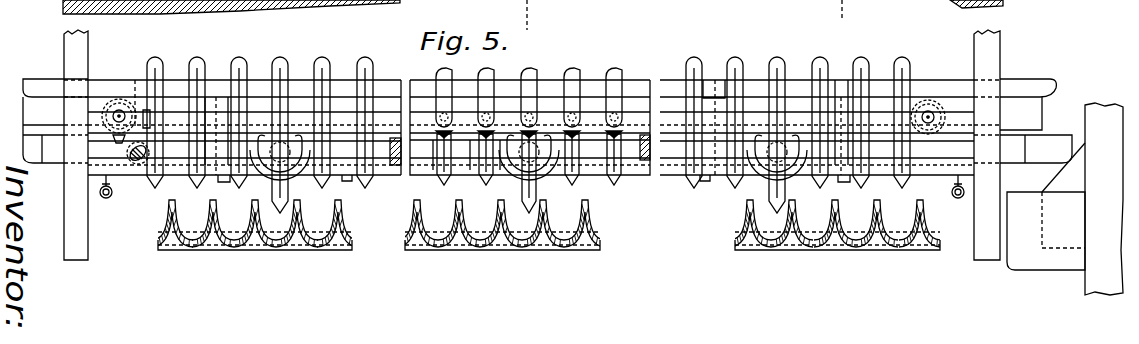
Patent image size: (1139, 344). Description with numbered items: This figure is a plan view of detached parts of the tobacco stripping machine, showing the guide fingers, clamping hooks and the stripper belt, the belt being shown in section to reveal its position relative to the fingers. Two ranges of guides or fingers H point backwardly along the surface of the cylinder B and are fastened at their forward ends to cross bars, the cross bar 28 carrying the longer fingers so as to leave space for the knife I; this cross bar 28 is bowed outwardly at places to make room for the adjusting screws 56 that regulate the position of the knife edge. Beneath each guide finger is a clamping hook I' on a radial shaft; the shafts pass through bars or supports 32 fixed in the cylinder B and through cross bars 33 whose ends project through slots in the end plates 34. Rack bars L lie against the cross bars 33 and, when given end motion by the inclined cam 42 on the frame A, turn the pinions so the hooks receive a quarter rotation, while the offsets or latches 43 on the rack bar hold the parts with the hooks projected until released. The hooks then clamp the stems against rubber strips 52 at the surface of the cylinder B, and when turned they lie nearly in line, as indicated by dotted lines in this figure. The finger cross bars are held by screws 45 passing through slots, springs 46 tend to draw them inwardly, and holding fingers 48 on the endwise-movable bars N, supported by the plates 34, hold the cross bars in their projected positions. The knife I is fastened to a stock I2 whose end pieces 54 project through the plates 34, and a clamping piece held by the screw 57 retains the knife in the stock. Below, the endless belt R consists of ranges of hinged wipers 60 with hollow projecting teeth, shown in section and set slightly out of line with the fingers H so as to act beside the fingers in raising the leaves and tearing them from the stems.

The cross bar 28 is at (408, 178).
The bars or supports 32 is at (380, 98).
The cross bars 33 is at (547, 130).
The plates 34 is at (532, 145).
The inclined plane or cam 42 is at (1047, 186).
The offsets or latches 43 is at (142, 165).
The screws 45 is at (226, 186).
The springs 46 is at (102, 196).
The holding fingers 48 is at (348, 185).
The rubber strips 52 is at (523, 116).
The end pieces 54 is at (533, 151).
The adjusting screws 56 is at (287, 162).
The screw 57 is at (126, 153).
The wipers 60 is at (503, 215).
The frame A is at (1065, 199).
The cylinder B is at (533, 13).
The guides or fingers H is at (472, 155).
The knife I is at (455, 123).
The clamping hook I' is at (529, 137).
The stock I2 is at (569, 155).
The rack bars L is at (540, 149).
The bars N is at (47, 70).
The endless belt R is at (546, 238).